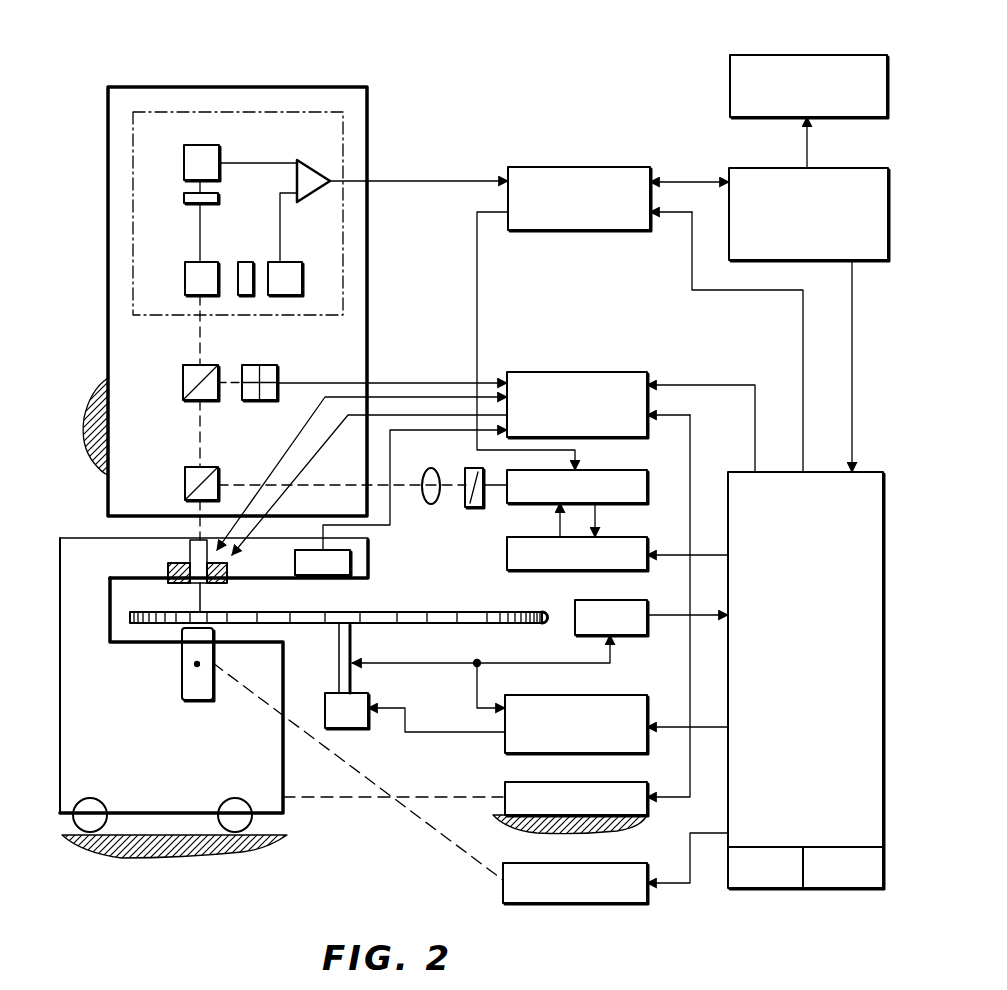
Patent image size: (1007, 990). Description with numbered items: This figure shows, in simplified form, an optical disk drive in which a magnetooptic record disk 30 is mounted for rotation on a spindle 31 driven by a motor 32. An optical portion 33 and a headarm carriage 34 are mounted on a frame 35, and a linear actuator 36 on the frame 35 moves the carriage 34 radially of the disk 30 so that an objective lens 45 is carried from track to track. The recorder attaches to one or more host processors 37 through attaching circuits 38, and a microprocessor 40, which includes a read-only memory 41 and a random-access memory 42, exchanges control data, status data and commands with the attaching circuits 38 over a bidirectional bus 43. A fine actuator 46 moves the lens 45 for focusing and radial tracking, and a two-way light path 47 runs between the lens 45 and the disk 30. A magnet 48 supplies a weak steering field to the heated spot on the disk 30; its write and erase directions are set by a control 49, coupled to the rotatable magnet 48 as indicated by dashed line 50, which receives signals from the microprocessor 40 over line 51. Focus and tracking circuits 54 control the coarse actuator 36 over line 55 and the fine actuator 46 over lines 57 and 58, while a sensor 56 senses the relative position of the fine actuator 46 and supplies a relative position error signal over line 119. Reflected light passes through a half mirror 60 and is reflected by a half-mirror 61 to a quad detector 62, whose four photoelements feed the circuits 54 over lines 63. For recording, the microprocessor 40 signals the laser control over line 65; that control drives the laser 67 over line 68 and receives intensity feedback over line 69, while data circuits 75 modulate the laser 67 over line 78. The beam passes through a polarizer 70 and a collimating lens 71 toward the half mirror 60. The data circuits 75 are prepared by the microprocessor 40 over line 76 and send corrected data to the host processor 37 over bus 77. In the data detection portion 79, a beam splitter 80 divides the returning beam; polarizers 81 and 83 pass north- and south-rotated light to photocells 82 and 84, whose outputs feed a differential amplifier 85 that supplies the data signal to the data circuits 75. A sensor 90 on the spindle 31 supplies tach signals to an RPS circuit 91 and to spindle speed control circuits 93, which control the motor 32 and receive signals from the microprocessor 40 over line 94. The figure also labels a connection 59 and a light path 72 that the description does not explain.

The magnetooptic record disk 30 is at (500, 608).
The spindle 31 is at (339, 652).
The motor 32 is at (322, 706).
The optical portion 33 is at (108, 210).
The headarm carriage 34 is at (265, 824).
The frame 35 is at (96, 378).
The linear actuator 36 is at (647, 771).
The host processor 37 is at (868, 55).
The attaching circuits 38 is at (844, 168).
The microprocessor 40 is at (793, 753).
The read-only memory (ROM) 41 is at (837, 890).
The random-access memory (RAM) 42 is at (772, 890).
The bidirectional bus 43 is at (872, 342).
The objective lens 45 is at (190, 552).
The fine actuator 46 is at (228, 574).
The two-way light path 47 is at (202, 608).
The magnet 48 is at (182, 663).
The magnet control 49 is at (608, 864).
The dashed line 50 is at (376, 784).
The line 51 is at (679, 880).
The focus and tracking circuits 54 is at (625, 372).
The line 55 is at (692, 440).
The sensor 56 is at (341, 572).
The line 57 is at (282, 454).
The line 58 is at (346, 420).
The line from microprocessor to focus and tracking 59 is at (747, 384).
The half mirror 60 is at (222, 464).
The half-mirror 61 is at (218, 364).
The quad detector 62 is at (282, 366).
The lines 63 is at (448, 382).
The line 65 is at (667, 554).
The laser 67 is at (650, 473).
The line 68 is at (553, 532).
The line 69 is at (597, 533).
The polarizer 70 is at (472, 508).
The collimating lens 71 is at (428, 474).
The laser beam path 72 is at (322, 485).
The data circuits 75 is at (622, 167).
The line 76 is at (807, 340).
The bus 77 is at (702, 178).
The line 78 is at (469, 266).
The data detection portion 79 is at (238, 145).
The beam splitter 80 is at (192, 262).
The first polarizer 81 is at (250, 262).
The photocell 82 is at (294, 262).
The polarizer 83 is at (184, 199).
The photocell 84 is at (184, 161).
The differential amplifier 85 is at (309, 161).
The sensor 90 is at (416, 662).
The RPS circuit 91 is at (646, 597).
The spindle speed control circuits 93 is at (629, 695).
The line 94 is at (672, 727).
The line 119 is at (392, 520).